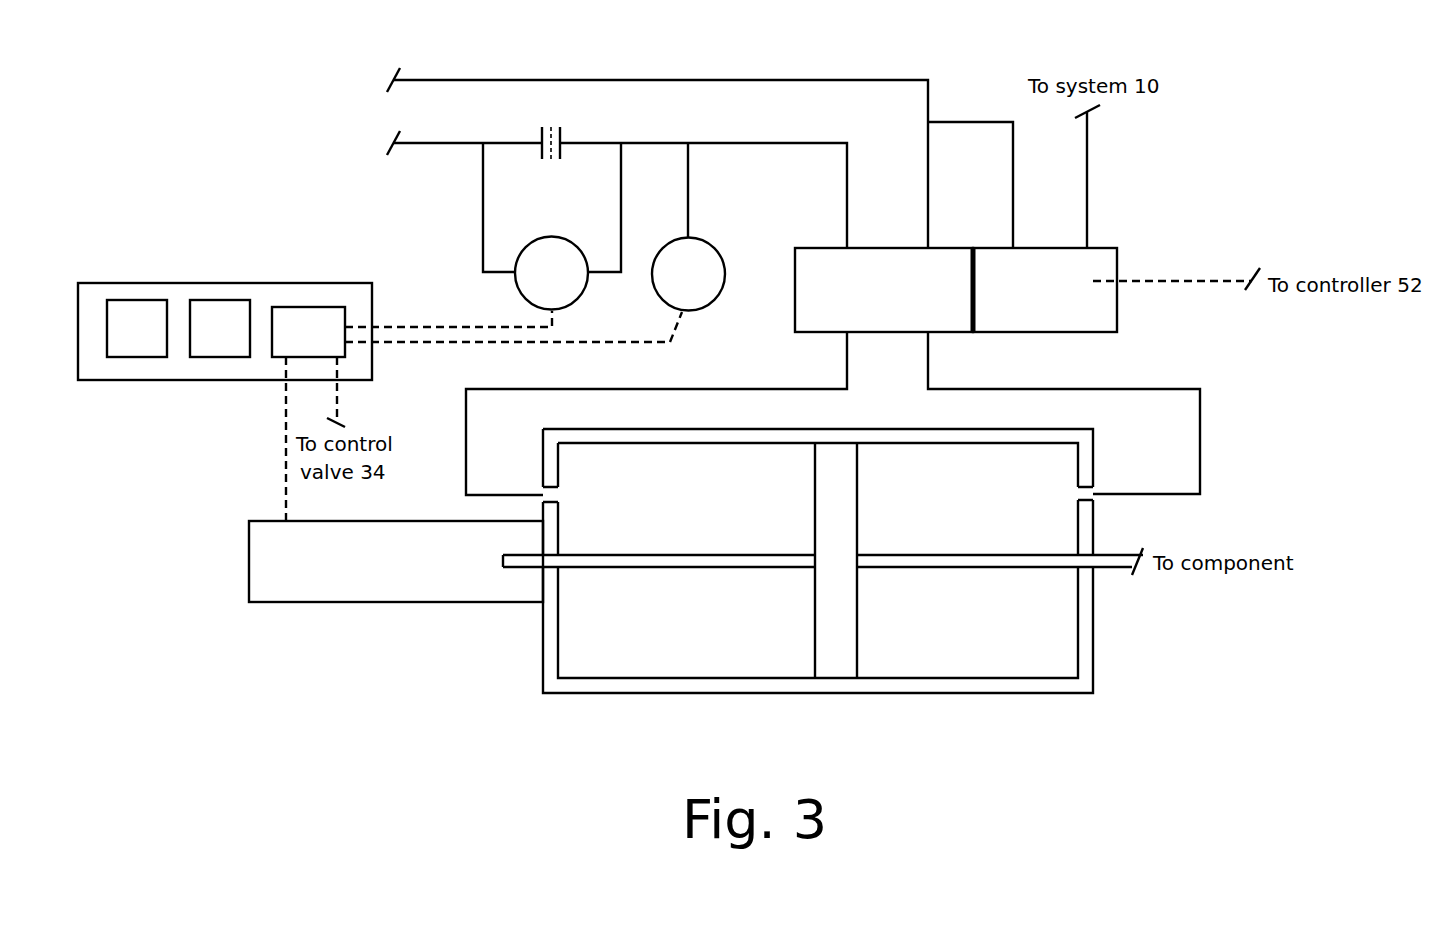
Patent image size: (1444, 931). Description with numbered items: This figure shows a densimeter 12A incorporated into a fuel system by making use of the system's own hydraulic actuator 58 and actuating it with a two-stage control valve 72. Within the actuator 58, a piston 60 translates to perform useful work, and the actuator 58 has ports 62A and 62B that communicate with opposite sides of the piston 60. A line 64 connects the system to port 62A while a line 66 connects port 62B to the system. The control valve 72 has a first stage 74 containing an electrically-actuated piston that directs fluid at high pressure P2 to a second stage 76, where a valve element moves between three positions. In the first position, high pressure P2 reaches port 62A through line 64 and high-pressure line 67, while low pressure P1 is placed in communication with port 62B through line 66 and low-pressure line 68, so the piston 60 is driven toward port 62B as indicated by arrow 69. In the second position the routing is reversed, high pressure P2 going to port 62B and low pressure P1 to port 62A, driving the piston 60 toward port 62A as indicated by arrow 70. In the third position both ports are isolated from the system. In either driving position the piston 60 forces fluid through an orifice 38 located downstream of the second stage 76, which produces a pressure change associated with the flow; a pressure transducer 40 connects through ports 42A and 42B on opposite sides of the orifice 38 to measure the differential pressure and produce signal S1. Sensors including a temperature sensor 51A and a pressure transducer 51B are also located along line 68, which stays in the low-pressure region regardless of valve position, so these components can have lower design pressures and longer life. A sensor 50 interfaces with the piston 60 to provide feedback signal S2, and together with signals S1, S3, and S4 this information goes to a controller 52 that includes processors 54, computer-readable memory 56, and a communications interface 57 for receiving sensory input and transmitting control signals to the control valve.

The densimeter 12A is at (1283, 402).
The orifice 38 is at (553, 161).
The pressure transducer 40 is at (565, 285).
The port 42A is at (588, 290).
The port 42B is at (515, 281).
The sensor 50 is at (398, 572).
The temperature sensor 51A is at (724, 227).
The pressure transducer 51B is at (715, 252).
The controller 52 is at (130, 283).
The processor 54 is at (150, 341).
The computer-readable memory 56 is at (233, 341).
The communications interface 57 is at (321, 341).
The hydraulic actuator 58 is at (800, 693).
The piston 60 is at (870, 552).
The port 62A is at (1092, 491).
The port 62B is at (546, 485).
The line 64 is at (1158, 387).
The line 66 is at (725, 385).
The high-pressure line 67 is at (710, 80).
The low-pressure line 68 is at (847, 185).
The arrow 69 is at (775, 595).
The arrow 70 is at (978, 595).
The two-stage control valve 72 is at (1108, 233).
The first stage 74 is at (1058, 297).
The second stage 76 is at (900, 297).
The low pressure P1 is at (847, 233).
The high pressure P2 is at (822, 80).
The signal S1 is at (272, 405).
The feedback signal S2 is at (433, 313).
The signal S3 is at (412, 367).
The signal S4 is at (438, 385).